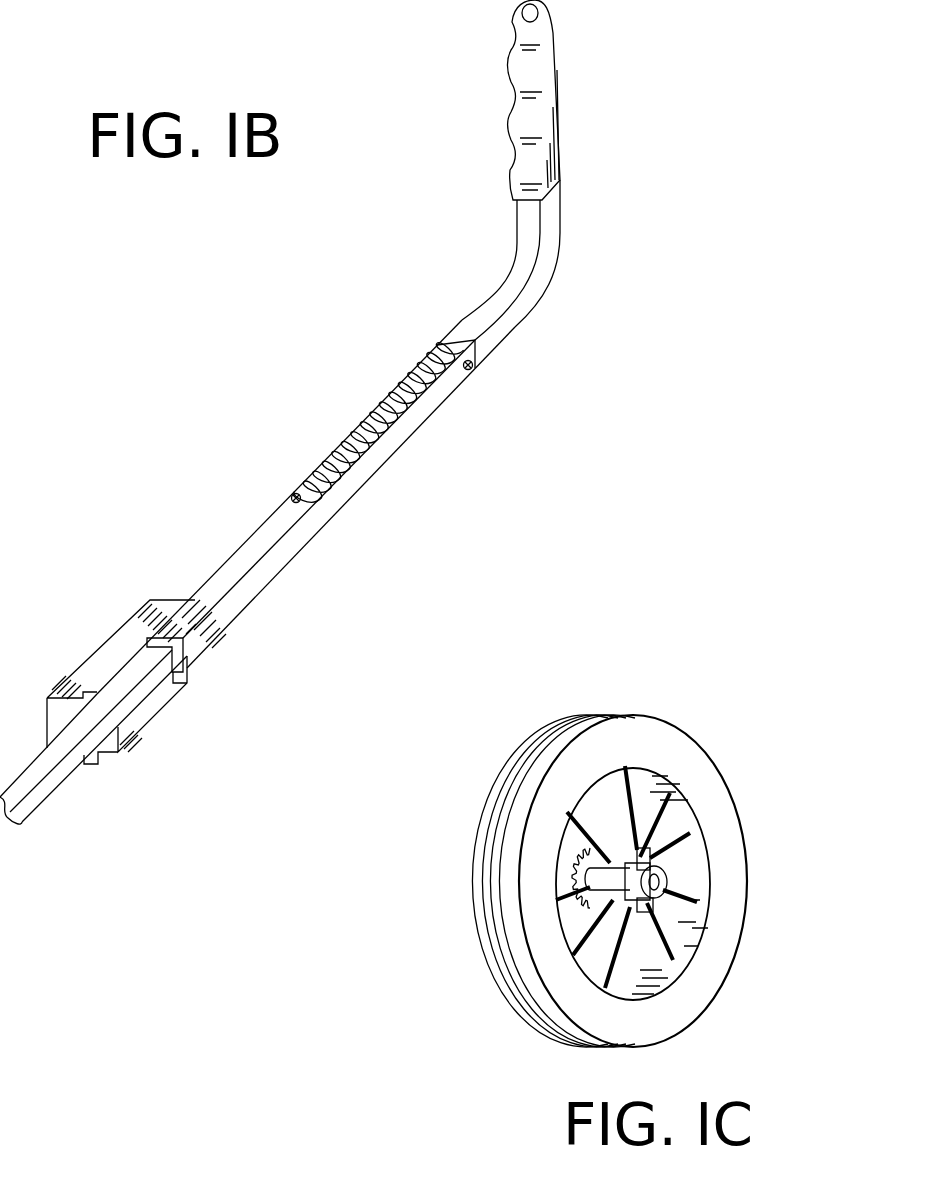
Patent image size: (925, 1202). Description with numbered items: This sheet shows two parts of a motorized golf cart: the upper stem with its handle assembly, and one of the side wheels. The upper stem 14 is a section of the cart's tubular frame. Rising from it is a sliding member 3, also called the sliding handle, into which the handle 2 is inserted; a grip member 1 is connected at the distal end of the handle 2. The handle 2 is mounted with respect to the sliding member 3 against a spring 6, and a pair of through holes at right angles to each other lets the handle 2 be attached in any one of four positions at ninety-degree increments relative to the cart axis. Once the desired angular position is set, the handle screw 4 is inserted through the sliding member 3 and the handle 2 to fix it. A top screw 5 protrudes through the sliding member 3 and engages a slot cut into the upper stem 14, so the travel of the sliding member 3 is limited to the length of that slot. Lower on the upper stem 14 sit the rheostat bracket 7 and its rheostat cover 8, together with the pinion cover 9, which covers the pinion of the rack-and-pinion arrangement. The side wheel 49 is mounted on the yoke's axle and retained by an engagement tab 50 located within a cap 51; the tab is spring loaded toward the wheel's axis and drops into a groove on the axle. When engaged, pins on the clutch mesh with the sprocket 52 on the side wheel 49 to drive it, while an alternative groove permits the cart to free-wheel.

In FIG. 1B, the grip member 1 is at (522, 76).
In FIG. 1B, the handle 2 is at (508, 285).
In FIG. 1B, the sliding member 3 is at (395, 462).
In FIG. 1B, the handle screw 4 is at (472, 367).
In FIG. 1B, the top screw 5 is at (292, 496).
In FIG. 1B, the spring 6 is at (382, 403).
In FIG. 1B, the rheostat bracket 7 is at (181, 597).
In FIG. 1B, the rheostat cover 8 is at (100, 650).
In FIG. 1B, the pinion cover 9 is at (165, 697).
In FIG. 1B, the upper stem 14 is at (60, 780).
In FIG. 1C, the side wheel 49 is at (727, 935).
In FIG. 1C, the engagement tab 50 is at (663, 856).
In FIG. 1C, the cap 51 is at (663, 880).
In FIG. 1C, the sprocket 52 is at (575, 862).